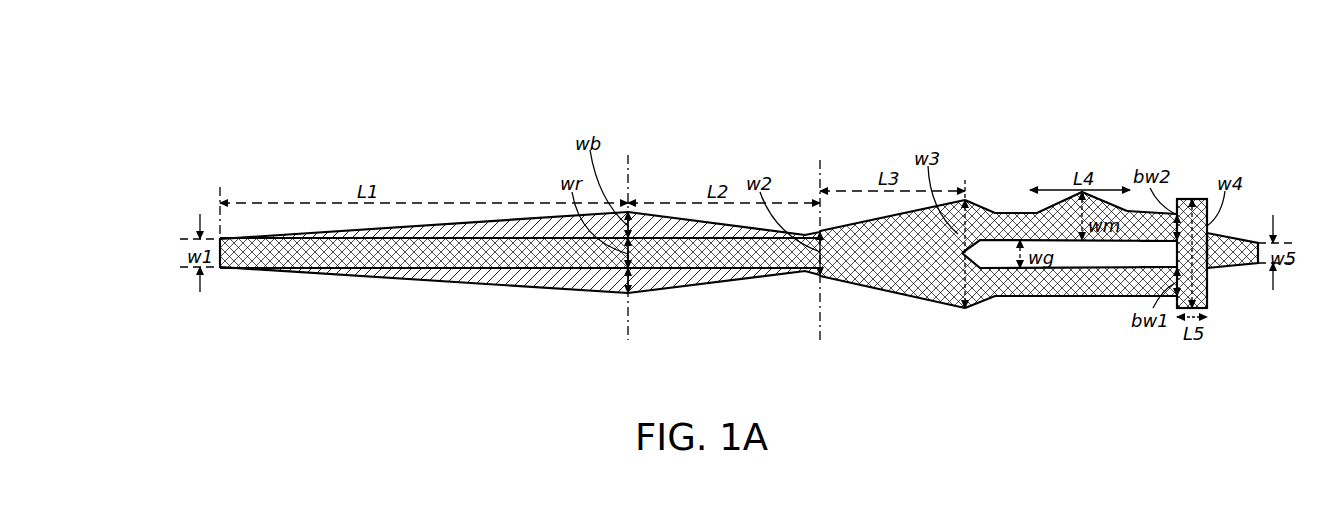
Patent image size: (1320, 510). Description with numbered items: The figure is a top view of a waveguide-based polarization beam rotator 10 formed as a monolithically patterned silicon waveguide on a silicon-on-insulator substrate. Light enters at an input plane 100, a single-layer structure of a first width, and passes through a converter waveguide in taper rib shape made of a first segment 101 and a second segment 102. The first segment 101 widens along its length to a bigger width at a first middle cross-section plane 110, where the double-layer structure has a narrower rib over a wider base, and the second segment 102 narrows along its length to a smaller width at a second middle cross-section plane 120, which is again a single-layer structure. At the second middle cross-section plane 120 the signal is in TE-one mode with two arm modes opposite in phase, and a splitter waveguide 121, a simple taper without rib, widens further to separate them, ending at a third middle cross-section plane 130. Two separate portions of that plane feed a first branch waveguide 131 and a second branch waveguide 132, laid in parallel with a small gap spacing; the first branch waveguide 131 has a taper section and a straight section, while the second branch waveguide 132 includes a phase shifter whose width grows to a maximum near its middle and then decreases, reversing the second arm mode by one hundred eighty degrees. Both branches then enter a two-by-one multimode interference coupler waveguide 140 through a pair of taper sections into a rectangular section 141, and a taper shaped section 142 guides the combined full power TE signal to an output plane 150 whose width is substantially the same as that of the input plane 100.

The polarization beam rotator 10 is at (834, 104).
The input plane 100 is at (224, 254).
The first segment 101 is at (453, 282).
The second segment 102 is at (703, 288).
The first middle cross-section plane 110 is at (632, 299).
The second middle cross-section plane 120 is at (825, 287).
The splitter waveguide 121 is at (898, 292).
The third middle cross-section plane 130 is at (968, 282).
The first branch waveguide 131 is at (1045, 296).
The second branch waveguide 132 is at (1075, 198).
The 2×1 multimode interference coupler waveguide 140 is at (1170, 266).
The rectangular section 141 is at (1188, 198).
The taper shaped section 142 is at (1223, 268).
The output plane 150 is at (1246, 264).